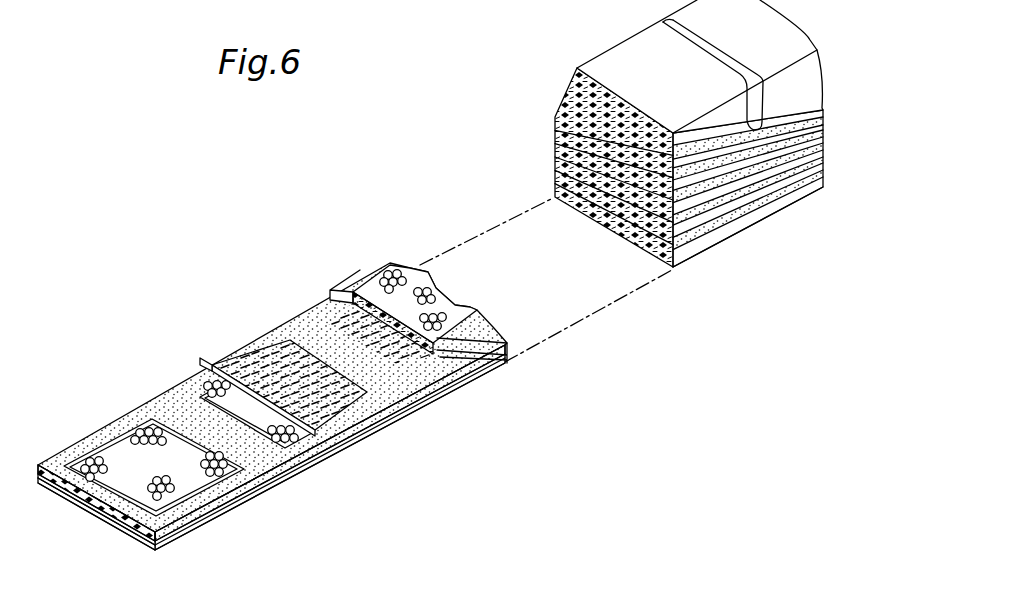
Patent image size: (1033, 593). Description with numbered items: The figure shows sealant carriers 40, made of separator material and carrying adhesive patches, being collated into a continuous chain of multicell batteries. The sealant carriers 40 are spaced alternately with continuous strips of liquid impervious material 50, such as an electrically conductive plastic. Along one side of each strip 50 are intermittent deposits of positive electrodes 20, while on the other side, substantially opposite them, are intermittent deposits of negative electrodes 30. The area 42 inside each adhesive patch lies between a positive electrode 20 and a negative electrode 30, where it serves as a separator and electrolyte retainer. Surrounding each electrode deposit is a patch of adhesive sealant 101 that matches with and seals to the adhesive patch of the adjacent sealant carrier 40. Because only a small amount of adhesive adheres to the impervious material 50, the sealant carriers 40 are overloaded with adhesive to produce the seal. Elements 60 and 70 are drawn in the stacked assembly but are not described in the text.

The positive electrode 20 is at (430, 360).
The negative electrode 30 is at (122, 445).
The sealant carrier 40 is at (266, 345).
The area inside adhesive patch 42 is at (243, 368).
The strip of liquid impervious material 50 is at (267, 473).
The cover 60 is at (823, 110).
The bottom layer 70 is at (267, 488).
The patch of adhesive sealant 101 is at (210, 500).